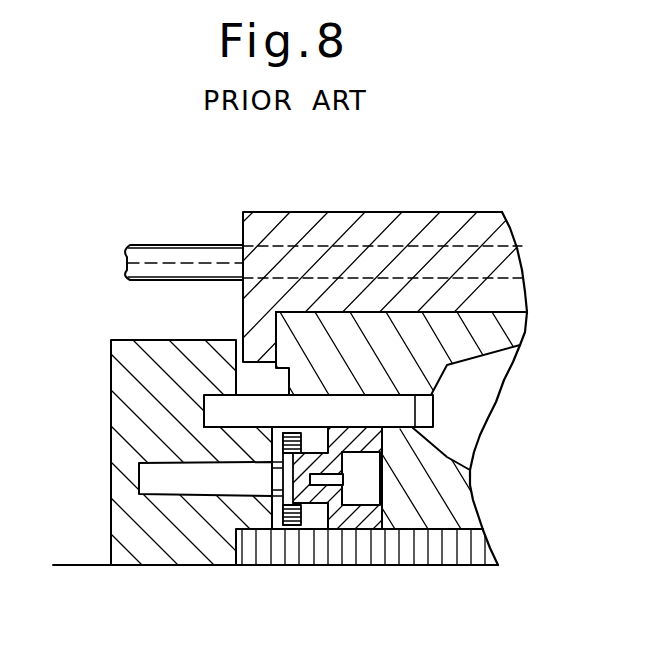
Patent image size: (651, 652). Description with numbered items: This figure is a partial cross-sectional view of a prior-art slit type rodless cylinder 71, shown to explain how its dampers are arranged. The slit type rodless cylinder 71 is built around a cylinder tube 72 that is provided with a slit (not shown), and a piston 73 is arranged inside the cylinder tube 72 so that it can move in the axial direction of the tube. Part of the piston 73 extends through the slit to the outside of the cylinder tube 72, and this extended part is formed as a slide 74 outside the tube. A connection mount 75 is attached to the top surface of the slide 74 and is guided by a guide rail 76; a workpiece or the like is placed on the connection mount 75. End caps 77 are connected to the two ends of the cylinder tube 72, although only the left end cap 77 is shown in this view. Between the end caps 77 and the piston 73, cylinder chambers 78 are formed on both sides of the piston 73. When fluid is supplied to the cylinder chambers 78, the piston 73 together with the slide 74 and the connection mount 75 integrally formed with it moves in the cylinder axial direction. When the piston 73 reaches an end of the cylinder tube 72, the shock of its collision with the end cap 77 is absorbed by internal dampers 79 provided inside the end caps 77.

The slit type rodless cylinder 71 is at (216, 176).
The cylinder tube 72 is at (418, 555).
The piston 73 is at (450, 497).
The slide 74 is at (497, 333).
The connection mount 75 is at (477, 223).
The guide rail 76 is at (155, 257).
The end cap 77 is at (122, 378).
The cylinder chamber 78 is at (316, 520).
The internal damper 79 is at (288, 522).